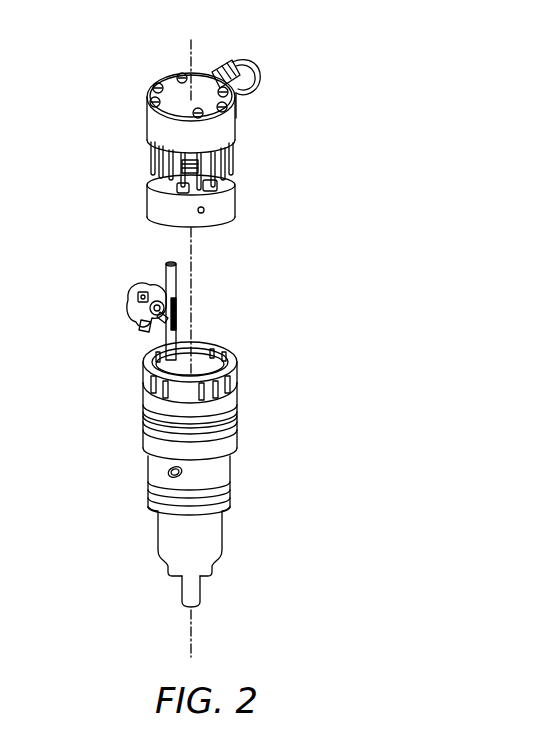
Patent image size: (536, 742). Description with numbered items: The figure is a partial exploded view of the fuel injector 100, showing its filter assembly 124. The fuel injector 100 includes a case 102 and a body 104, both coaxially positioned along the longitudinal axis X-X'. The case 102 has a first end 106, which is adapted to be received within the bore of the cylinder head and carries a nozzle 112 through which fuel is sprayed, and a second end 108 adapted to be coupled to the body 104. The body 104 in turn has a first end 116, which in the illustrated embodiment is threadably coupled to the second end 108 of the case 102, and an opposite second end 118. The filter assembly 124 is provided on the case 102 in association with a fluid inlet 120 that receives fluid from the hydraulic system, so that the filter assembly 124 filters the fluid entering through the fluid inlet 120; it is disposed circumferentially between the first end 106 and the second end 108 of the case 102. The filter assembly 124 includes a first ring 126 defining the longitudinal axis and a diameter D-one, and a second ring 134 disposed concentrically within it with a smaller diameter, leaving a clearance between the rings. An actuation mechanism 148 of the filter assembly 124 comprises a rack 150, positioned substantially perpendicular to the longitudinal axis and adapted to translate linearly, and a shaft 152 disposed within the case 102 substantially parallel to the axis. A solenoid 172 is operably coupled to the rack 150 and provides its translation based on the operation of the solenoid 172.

The fuel injector 100 is at (383, 73).
The case 102 is at (243, 457).
The body 104 is at (124, 133).
The first end 106 is at (218, 582).
The second end 108 is at (252, 394).
The nozzle 112 is at (182, 590).
The first end 116 is at (218, 247).
The second end 118 is at (206, 80).
The fluid inlet 120 is at (256, 360).
The filter assembly 124 is at (126, 351).
The first ring 126 is at (143, 400).
The second ring 134 is at (201, 352).
The actuation mechanism 148 is at (188, 300).
The rack 150 is at (142, 316).
The shaft 152 is at (165, 266).
The solenoid 172 is at (130, 294).